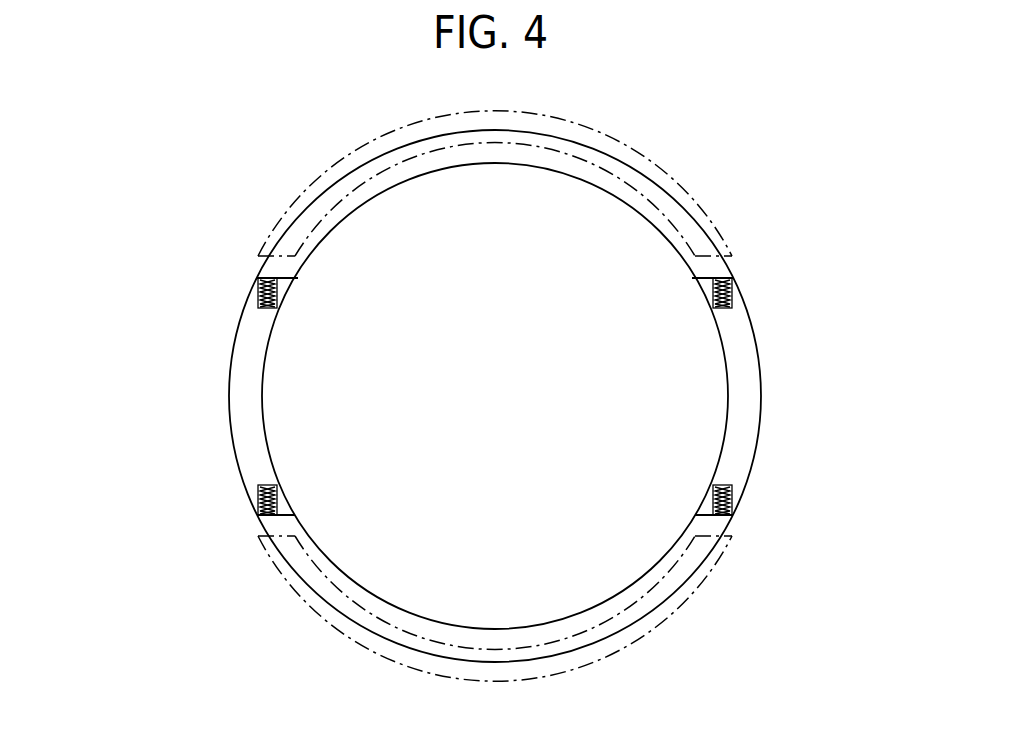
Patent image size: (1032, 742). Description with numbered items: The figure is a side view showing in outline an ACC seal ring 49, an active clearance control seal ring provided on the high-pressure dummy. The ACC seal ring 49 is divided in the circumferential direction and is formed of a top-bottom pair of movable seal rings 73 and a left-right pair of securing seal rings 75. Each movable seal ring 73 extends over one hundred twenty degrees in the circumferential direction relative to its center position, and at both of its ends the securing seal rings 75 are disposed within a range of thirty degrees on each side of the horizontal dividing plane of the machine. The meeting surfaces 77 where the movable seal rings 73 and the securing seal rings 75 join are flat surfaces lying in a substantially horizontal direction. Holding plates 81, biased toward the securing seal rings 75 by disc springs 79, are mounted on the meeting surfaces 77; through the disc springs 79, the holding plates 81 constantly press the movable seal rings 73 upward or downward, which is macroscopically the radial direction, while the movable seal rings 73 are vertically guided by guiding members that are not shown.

The ACC seal ring 49 is at (800, 162).
The movable seal ring 73 is at (667, 190).
The securing seal ring 75 is at (230, 388).
The meeting surface 77 is at (298, 276).
The disc spring 79 is at (258, 296).
The holding plate 81 is at (259, 278).